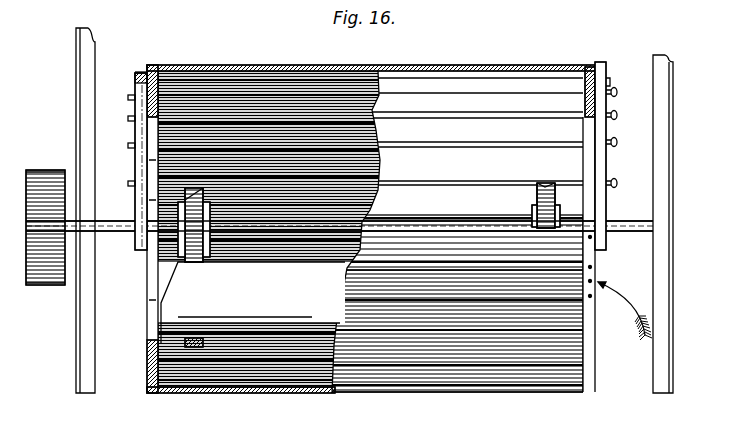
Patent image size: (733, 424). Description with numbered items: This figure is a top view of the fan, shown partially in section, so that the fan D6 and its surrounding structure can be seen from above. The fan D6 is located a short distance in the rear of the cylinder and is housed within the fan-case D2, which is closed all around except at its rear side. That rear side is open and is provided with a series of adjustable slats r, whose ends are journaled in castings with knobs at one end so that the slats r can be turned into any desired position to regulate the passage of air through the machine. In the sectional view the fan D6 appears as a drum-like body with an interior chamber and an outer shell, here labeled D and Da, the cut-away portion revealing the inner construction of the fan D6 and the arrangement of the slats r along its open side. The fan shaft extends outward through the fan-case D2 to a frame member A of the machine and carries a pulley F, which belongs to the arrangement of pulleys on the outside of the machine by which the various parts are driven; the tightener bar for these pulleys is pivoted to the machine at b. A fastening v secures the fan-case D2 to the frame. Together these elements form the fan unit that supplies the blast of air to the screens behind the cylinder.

The frame plate A is at (76, 131).
The pulley F is at (26, 237).
The drum D is at (341, 217).
The fan-case D2 is at (128, 242).
The fan D6 is at (252, 304).
The outer drum shell Da is at (418, 310).
The adjustable slats r is at (213, 72).
The pivot of tightener bar b is at (136, 73).
The bolt v is at (625, 311).